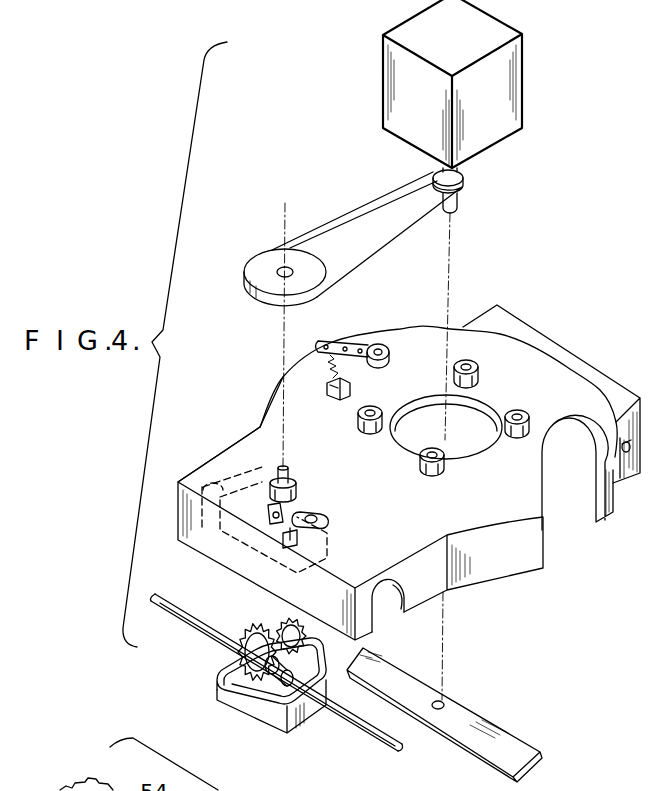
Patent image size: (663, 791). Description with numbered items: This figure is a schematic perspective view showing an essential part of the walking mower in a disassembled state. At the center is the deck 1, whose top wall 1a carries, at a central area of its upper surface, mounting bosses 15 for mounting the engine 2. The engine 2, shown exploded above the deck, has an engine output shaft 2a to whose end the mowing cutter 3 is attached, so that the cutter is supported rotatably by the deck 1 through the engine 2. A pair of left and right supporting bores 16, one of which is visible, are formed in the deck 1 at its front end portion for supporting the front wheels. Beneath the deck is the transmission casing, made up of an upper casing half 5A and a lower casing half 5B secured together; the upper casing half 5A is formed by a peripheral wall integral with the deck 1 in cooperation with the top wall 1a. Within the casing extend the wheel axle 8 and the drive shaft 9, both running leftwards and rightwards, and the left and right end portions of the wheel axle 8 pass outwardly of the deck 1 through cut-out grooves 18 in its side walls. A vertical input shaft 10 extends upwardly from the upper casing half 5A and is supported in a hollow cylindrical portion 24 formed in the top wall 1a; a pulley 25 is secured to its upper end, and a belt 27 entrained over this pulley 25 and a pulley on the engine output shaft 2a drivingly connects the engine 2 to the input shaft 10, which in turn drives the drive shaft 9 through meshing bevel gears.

The deck 1 is at (518, 552).
The top wall of the deck 1a is at (237, 480).
The engine 2 is at (495, 97).
The engine output shaft 2a is at (458, 205).
The mowing cutter 3 is at (513, 743).
The upper casing half 5A is at (245, 537).
The lower casing half 5B is at (303, 713).
The wheel axle 8 is at (207, 630).
The drive shaft 9 is at (290, 630).
The input shaft 10 is at (294, 468).
The mounting bosses 15 is at (383, 403).
The supporting bore 16 is at (627, 475).
The cut-out groove 18 is at (389, 603).
The hollow cylindrical portion 24 is at (296, 490).
The pulley 25 is at (263, 270).
The belt 27 is at (388, 243).